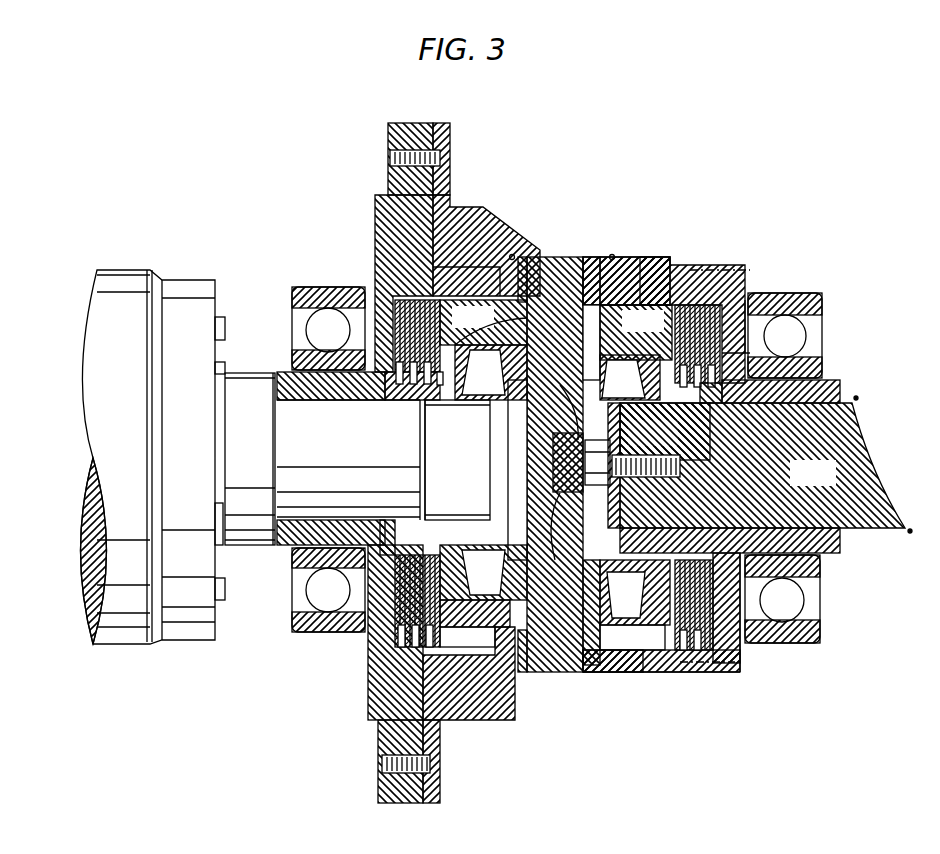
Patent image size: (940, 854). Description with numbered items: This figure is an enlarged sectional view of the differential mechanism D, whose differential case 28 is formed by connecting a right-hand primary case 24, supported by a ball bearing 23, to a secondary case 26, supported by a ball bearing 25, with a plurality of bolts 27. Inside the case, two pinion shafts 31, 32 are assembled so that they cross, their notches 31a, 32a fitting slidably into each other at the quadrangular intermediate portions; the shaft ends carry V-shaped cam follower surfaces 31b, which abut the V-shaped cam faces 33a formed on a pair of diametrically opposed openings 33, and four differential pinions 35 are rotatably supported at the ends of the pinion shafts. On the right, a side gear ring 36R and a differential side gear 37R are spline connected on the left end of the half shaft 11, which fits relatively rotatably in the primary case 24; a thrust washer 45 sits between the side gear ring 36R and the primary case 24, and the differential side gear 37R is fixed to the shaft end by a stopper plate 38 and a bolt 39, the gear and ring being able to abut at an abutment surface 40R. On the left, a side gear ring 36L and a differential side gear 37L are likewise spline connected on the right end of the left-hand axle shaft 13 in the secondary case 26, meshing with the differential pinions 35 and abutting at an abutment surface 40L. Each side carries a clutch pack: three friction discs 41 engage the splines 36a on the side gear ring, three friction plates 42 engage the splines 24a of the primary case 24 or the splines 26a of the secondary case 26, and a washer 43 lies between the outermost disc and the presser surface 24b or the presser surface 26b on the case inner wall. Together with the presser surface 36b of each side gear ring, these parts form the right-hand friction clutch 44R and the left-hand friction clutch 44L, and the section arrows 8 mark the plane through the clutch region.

The half shaft 11 is at (800, 487).
The left-hand axle shaft 13 is at (234, 457).
The ball bearing 23 is at (785, 318).
The primary case 24 is at (484, 205).
The splines 24a is at (612, 672).
The presser surface 24b is at (748, 352).
The ball bearing 25 is at (300, 323).
The secondary case 26 is at (372, 222).
The splines 26a is at (490, 720).
The presser surface 26b is at (300, 344).
The bolts 27 is at (442, 150).
The differential case 28 is at (638, 675).
The pinion shaft 31 is at (545, 255).
The notch 31a is at (563, 410).
The cam follower surface 31b is at (650, 262).
The pinion shaft 32 is at (560, 528).
The notch 32a is at (556, 440).
The opening 33 is at (521, 268).
The cam face 33a is at (568, 265).
The differential pinion 35 is at (522, 335).
The splines 36a is at (396, 403).
The presser surface 36b is at (556, 330).
The side gear ring 36L is at (463, 720).
The side gear ring 36R is at (656, 632).
The differential side gear 37L is at (468, 545).
The differential side gear 37R is at (660, 514).
The stopper plate 38 is at (616, 490).
The bolt 39 is at (680, 466).
The abutment surface 40L is at (457, 460).
The abutment surface 40R is at (665, 431).
The friction disc 41 is at (430, 402).
The friction plate 42 is at (420, 647).
The washer 43 is at (400, 330).
The left-hand friction clutch 44L is at (405, 298).
The right-hand friction clutch 44R is at (690, 300).
The thrust washer 45 is at (362, 500).
The section line 8 is at (512, 290).
The differential mechanism D is at (656, 212).